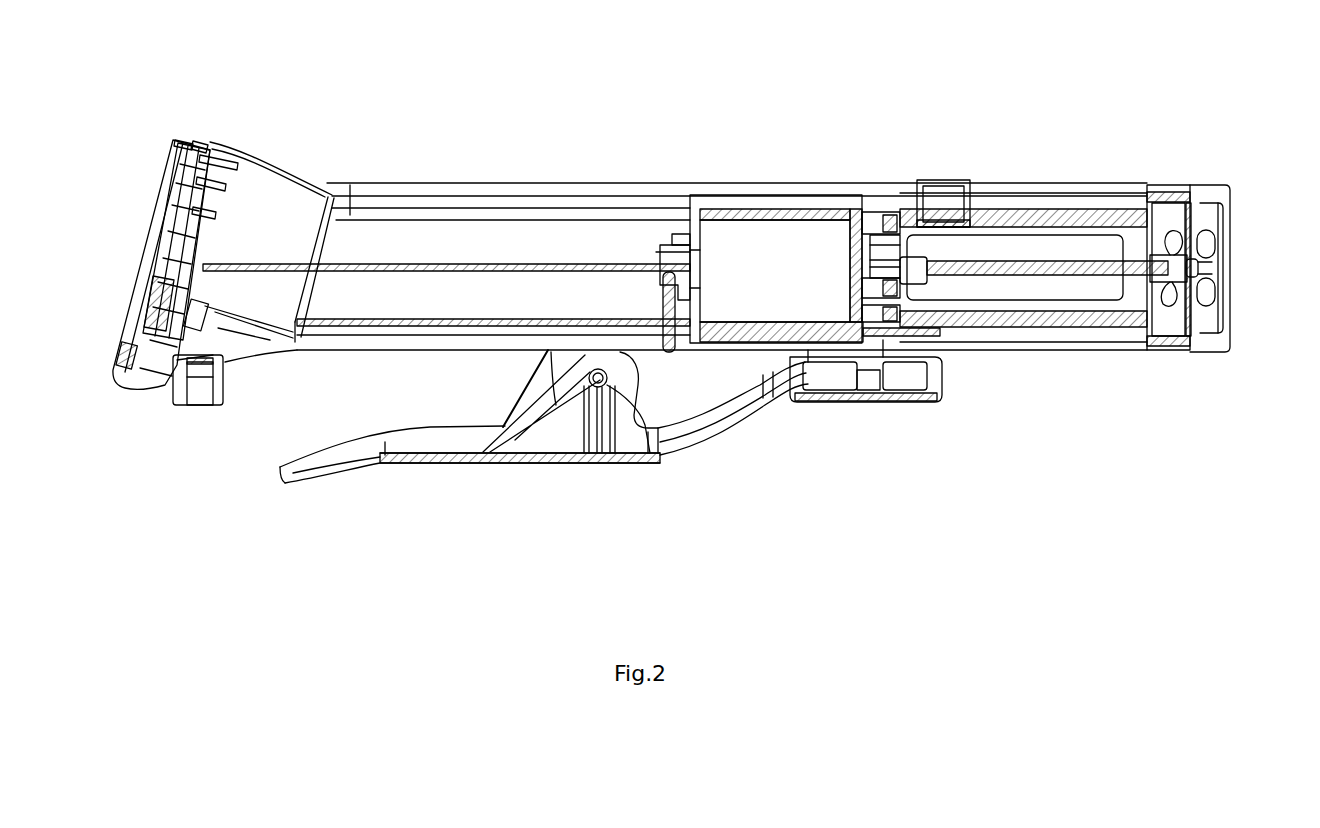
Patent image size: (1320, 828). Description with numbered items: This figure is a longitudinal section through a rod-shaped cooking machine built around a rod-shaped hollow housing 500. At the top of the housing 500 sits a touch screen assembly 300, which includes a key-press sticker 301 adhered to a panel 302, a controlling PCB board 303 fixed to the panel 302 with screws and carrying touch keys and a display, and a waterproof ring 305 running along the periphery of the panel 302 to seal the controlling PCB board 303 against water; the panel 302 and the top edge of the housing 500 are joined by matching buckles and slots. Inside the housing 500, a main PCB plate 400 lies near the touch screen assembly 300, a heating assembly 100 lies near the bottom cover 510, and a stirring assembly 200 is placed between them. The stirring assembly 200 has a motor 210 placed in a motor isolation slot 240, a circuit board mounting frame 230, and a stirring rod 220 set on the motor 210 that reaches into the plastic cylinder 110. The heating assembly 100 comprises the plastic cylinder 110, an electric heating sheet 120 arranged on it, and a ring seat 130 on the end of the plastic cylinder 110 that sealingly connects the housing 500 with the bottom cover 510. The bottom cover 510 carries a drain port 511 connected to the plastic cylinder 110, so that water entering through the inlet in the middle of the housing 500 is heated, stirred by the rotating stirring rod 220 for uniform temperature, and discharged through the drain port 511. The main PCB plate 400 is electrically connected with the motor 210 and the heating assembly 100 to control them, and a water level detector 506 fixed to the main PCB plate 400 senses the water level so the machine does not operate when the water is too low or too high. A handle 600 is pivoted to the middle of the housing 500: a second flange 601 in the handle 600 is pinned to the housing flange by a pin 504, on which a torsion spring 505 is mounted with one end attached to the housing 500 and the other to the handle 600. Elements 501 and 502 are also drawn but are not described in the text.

The heating assembly 100 is at (1052, 290).
The plastic cylinder 110 is at (1070, 220).
The electric heating sheet 120 is at (1108, 208).
The ring seat 130 is at (1178, 210).
The stirring assembly 200 is at (813, 297).
The motor 210 is at (780, 250).
The stirring rod 220 is at (1027, 267).
The circuit board mounting frame 230 is at (672, 210).
The motor isolation slot 240 is at (820, 212).
The touch screen assembly 300 is at (167, 177).
The key-press sticker 301 is at (143, 260).
The panel 302 is at (127, 333).
The controlling PCB board 303 is at (185, 140).
The waterproof ring 305 is at (223, 100).
The main PCB plate 400 is at (465, 208).
The housing 500 is at (653, 187).
The cup 501 is at (938, 205).
The slot 502 is at (1207, 245).
The pin 504 is at (655, 462).
The torsion spring 505 is at (598, 457).
The water level detector 506 is at (675, 292).
The bottom cover 510 is at (1207, 318).
The drain port 511 is at (1205, 268).
The handle 600 is at (547, 460).
The second flange 601 is at (487, 455).